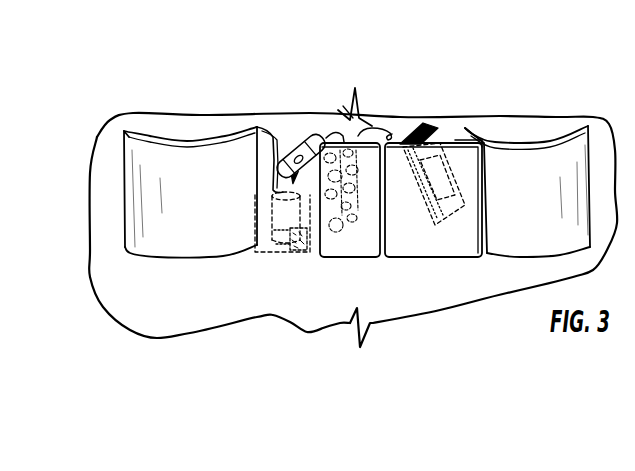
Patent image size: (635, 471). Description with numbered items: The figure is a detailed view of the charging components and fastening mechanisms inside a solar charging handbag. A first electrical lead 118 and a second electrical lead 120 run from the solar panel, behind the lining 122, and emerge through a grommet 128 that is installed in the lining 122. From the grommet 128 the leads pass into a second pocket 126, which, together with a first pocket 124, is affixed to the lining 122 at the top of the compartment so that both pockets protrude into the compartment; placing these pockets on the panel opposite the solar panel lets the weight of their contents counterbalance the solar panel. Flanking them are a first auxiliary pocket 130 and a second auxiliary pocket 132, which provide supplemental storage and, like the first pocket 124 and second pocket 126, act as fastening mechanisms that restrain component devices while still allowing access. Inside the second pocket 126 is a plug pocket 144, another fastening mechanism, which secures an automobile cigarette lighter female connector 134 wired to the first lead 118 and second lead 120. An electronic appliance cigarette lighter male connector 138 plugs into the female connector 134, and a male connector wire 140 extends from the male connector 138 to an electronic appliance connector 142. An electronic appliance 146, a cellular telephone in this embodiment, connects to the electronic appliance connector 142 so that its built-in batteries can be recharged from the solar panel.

The first electrical lead 118 is at (283, 240).
The second electrical lead 120 is at (290, 248).
The lining 122 is at (443, 125).
The first pocket 124 is at (452, 140).
The second pocket 126 is at (274, 124).
The grommet 128 is at (310, 240).
The first auxiliary pocket 130 is at (187, 140).
The second auxiliary pocket 132 is at (553, 135).
The automobile cigarette lighter female connector 134 is at (267, 220).
The electronic appliance cigarette lighter male connector 138 is at (309, 124).
The male connector wire 140 is at (358, 110).
The electronic appliance connector 142 is at (395, 133).
The plug pocket 144 is at (310, 217).
The electronic appliance 146 is at (435, 223).